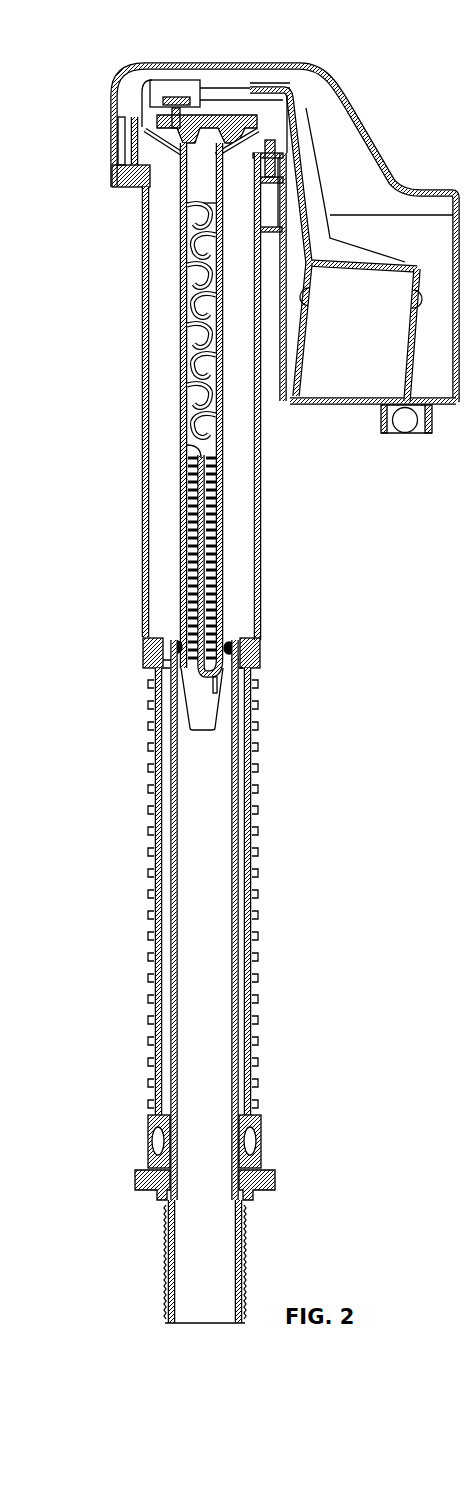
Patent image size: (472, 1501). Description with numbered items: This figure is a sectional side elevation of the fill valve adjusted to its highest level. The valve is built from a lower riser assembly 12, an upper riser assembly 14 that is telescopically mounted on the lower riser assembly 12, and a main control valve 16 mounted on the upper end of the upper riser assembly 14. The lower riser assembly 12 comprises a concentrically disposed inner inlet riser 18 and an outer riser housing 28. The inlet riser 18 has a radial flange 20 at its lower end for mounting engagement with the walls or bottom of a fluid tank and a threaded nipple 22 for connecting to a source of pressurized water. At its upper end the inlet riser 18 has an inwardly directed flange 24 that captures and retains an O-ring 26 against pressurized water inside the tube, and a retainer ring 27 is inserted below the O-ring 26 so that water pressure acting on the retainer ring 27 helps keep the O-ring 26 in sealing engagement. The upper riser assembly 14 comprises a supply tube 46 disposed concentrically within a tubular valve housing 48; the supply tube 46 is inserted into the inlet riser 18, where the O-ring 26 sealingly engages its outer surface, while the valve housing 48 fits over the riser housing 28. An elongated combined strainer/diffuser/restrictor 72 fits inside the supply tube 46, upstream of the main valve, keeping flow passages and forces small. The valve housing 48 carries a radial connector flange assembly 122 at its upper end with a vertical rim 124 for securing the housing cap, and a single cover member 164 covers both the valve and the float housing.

The lower riser assembly 12 is at (128, 861).
The upper riser assembly 14 is at (128, 436).
The main control valve 16 is at (136, 88).
The inlet riser 18 is at (239, 816).
The radial flange 20 is at (268, 1155).
The threaded nipple 22 is at (165, 1262).
The inwardly directed flange 24 is at (224, 640).
The O-ring 26 is at (229, 649).
The retainer ring 27 is at (229, 654).
The outer riser housing 28 is at (258, 888).
The supply tube 46 is at (224, 405).
The valve housing 48 is at (262, 512).
The combined strainer/diffuser/restrictor 72 is at (189, 718).
The radial connector flange assembly 122 is at (123, 188).
The vertical rim 124 is at (123, 157).
The cover member 164 is at (338, 108).